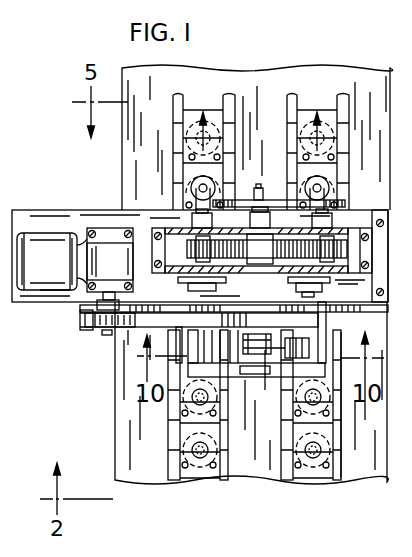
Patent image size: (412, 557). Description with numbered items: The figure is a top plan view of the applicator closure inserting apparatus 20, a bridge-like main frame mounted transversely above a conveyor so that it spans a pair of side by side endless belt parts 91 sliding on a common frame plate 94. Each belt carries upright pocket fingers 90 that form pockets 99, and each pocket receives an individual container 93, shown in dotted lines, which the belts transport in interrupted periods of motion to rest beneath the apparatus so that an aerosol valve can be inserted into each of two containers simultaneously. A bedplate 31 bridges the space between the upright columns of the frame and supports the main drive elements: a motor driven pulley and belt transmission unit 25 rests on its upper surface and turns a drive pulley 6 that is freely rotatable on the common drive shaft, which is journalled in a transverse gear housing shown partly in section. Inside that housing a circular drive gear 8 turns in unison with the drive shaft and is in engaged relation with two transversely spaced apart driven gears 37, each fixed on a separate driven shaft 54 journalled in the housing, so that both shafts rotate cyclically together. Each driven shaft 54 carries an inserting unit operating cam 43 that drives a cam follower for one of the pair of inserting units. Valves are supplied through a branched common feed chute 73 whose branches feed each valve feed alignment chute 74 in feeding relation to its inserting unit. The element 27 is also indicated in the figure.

The applicator closure inserting apparatus 20 is at (81, 210).
The motor driven pulley and belt transmission unit 25 is at (38, 265).
The driven gears 37 is at (188, 247).
The circular drive gear 8 is at (247, 233).
The driven shafts 54 is at (319, 215).
The end plate 27 is at (357, 256).
The inserting unit operating cams 43 is at (213, 283).
The bedplate 31 is at (341, 303).
The drive pulley 6 is at (199, 322).
The valve feed alignment chute 74 is at (190, 337).
The branched common feed chute 73 is at (267, 373).
The container 93 is at (188, 119).
The pockets 99 is at (185, 433).
The upright pocket fingers 90 is at (330, 415).
The common frame plate 94 is at (139, 473).
The endless belt parts 91 is at (188, 475).